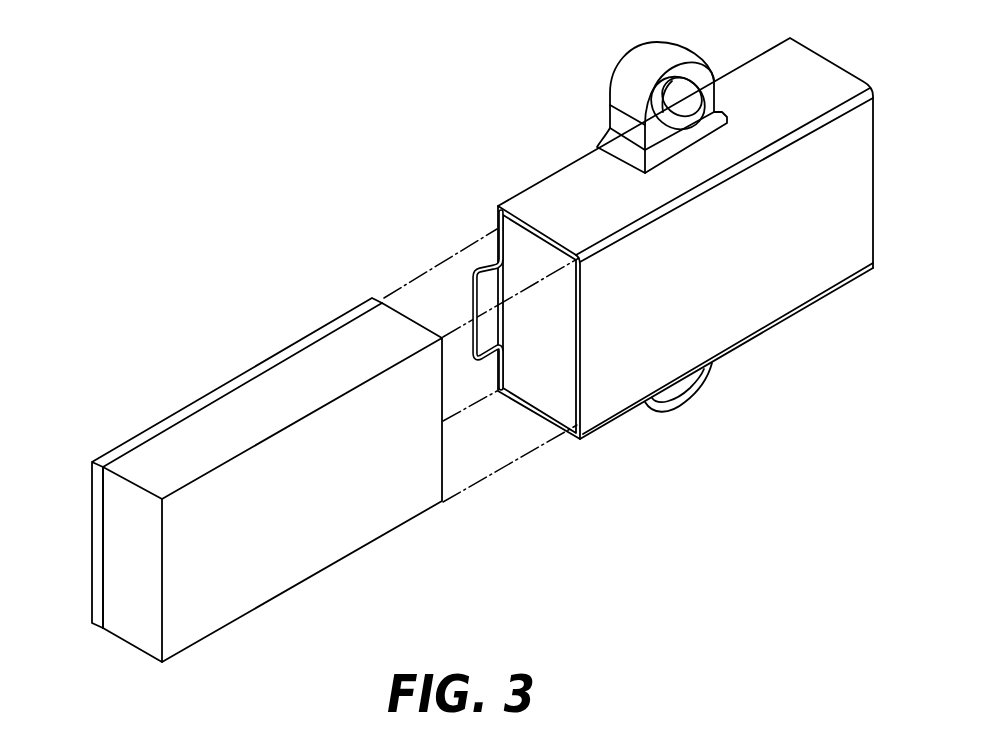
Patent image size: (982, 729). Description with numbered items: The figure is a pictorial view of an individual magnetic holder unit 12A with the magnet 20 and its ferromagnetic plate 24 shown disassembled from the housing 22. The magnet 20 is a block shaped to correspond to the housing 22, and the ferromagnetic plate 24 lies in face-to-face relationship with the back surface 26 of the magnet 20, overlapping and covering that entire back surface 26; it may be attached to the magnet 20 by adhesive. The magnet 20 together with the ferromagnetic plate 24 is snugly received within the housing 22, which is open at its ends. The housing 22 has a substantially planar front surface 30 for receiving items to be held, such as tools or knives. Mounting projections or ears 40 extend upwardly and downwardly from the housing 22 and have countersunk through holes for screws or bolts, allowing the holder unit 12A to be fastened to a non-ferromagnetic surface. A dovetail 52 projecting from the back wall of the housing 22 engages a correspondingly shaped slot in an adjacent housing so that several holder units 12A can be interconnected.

The magnetic holder unit 12A is at (874, 300).
The magnet 20 is at (198, 623).
The housing 22 is at (873, 177).
The ferromagnetic plate 24 is at (92, 520).
The back surface of the magnet 26 is at (102, 575).
The front surface 30 is at (732, 256).
The mounting projection 40 is at (638, 68).
The dovetail 52 is at (470, 310).